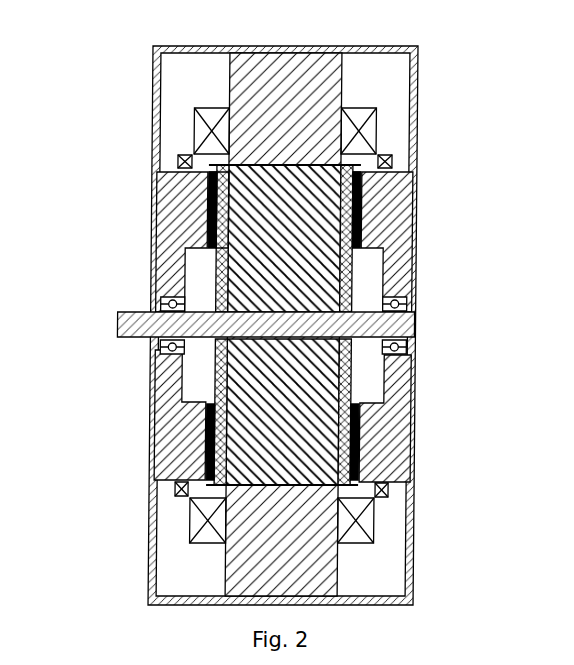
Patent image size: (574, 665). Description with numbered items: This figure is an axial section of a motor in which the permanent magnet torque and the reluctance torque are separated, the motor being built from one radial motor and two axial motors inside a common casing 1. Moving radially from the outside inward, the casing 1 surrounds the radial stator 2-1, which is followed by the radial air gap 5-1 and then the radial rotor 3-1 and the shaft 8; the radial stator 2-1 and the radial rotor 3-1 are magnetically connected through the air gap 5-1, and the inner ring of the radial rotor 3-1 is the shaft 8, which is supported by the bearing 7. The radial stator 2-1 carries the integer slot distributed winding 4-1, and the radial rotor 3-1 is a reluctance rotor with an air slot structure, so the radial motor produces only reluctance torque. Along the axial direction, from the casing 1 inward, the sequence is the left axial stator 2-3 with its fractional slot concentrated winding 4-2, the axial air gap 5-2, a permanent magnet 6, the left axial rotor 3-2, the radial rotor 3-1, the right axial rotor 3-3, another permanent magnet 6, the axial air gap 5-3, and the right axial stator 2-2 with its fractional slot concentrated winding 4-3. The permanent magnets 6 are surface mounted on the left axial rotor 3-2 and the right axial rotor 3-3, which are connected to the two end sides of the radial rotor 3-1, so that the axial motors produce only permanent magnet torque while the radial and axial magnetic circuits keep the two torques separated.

The casing 1 is at (373, 50).
The radial stator 2-1 is at (303, 105).
The right axial stator 2-2 is at (396, 264).
The left axial stator 2-3 is at (172, 390).
The radial rotor 3-1 is at (330, 215).
The left axial rotor 3-2 is at (222, 258).
The right axial rotor 3-3 is at (343, 362).
The integer slot distributed winding 4-1 is at (367, 130).
The fractional slot concentrated winding 4-2 is at (179, 157).
The fractional slot concentrated winding 4-3 is at (383, 162).
The radial air gap 5-1 is at (277, 165).
The axial air gap 5-2 is at (212, 203).
The axial air gap 5-3 is at (360, 422).
The permanent magnet 6 is at (212, 222).
The bearing 7 is at (170, 345).
The shaft 8 is at (396, 323).